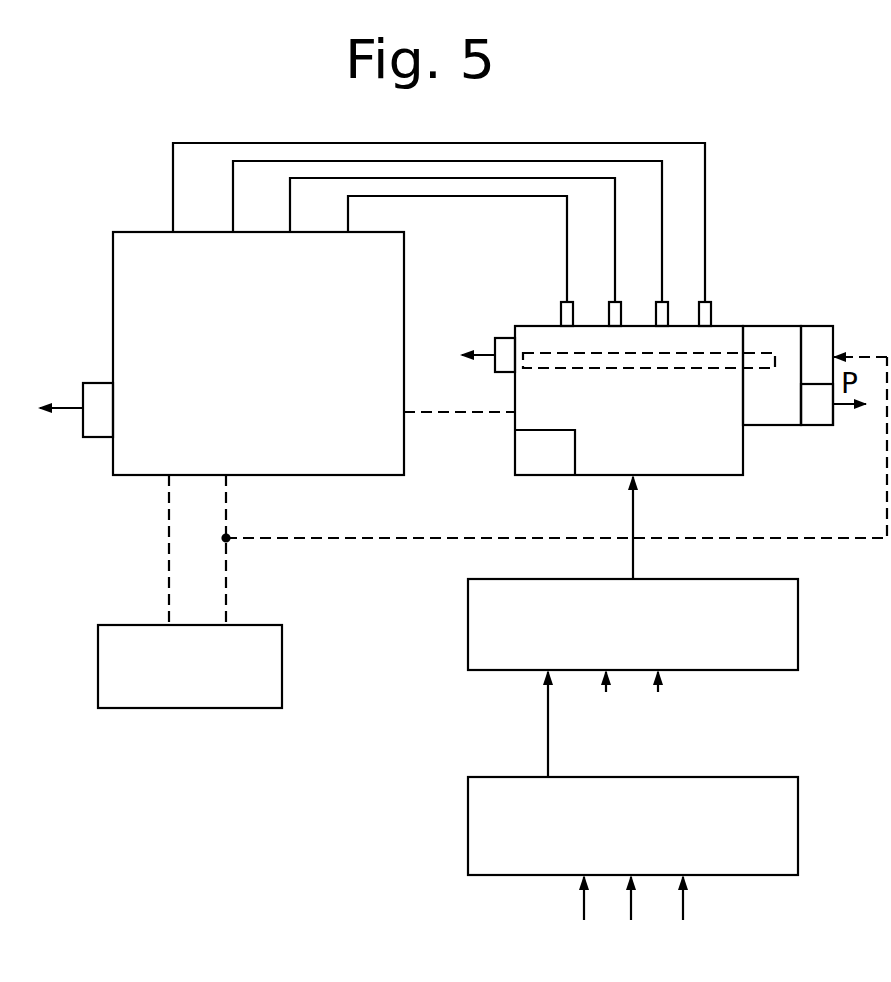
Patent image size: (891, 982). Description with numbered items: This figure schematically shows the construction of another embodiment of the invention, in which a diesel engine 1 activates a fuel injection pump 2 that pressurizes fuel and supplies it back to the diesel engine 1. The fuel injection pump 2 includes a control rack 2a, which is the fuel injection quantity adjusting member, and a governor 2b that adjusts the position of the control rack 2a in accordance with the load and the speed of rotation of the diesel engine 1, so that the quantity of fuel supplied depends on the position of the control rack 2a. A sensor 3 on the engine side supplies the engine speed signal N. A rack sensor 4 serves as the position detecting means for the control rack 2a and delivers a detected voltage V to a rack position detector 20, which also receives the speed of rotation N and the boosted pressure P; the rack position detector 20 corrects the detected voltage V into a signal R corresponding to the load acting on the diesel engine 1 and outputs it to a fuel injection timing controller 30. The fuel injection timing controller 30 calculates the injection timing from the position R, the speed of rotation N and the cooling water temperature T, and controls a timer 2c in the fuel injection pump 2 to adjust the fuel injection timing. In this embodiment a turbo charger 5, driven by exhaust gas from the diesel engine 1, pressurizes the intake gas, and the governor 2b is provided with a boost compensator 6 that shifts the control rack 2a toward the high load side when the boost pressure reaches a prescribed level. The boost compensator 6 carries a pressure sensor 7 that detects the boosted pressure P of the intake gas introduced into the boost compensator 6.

The diesel engine 1 is at (113, 310).
The fuel injection pump 2 is at (690, 476).
The control rack 2a is at (710, 353).
The governor 2b is at (793, 326).
The timer 2c is at (560, 466).
The engine speed sensor 3 is at (95, 437).
The rack sensor 4 is at (505, 338).
The turbo charger 5 is at (193, 708).
The boost compensator 6 is at (817, 326).
The pressure sensor 7 is at (815, 426).
The rack position detector 20 is at (798, 827).
The fuel injection timing controller 30 is at (798, 622).